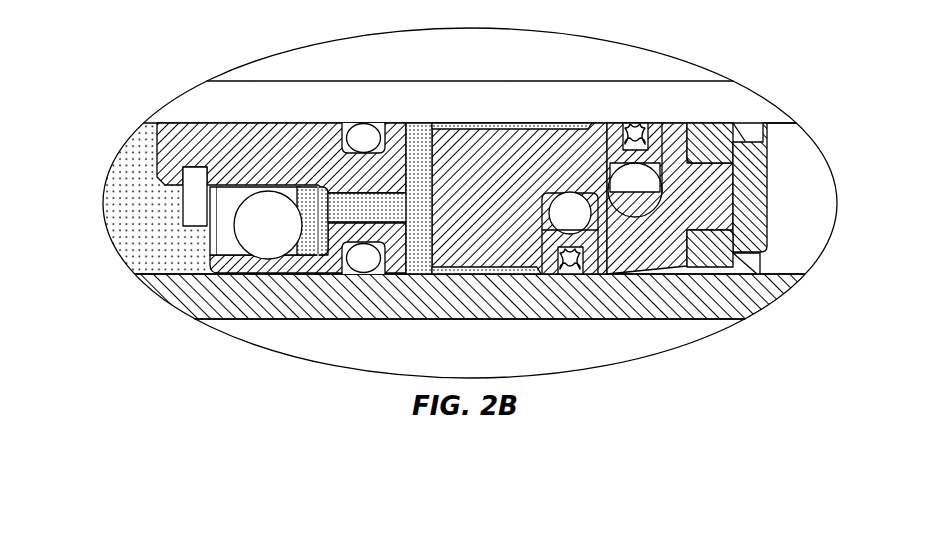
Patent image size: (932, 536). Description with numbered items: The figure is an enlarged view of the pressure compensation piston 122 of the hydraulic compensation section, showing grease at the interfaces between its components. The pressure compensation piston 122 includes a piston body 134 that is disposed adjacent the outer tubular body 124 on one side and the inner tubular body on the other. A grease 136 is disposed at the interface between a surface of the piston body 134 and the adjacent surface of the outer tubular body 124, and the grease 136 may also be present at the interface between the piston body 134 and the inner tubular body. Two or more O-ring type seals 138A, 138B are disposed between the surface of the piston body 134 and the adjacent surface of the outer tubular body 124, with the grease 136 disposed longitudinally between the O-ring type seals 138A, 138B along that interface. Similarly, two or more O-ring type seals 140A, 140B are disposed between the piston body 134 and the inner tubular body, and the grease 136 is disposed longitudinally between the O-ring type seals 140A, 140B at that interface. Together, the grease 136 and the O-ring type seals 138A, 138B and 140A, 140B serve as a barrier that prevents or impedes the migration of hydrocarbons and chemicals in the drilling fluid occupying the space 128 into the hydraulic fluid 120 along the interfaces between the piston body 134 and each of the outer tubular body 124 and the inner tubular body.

The hydraulic fluid 120 is at (142, 212).
The pressure compensation piston 122 is at (262, 67).
The outer tubular body 124 is at (485, 100).
The space 128 is at (789, 183).
The piston body 134 is at (288, 138).
The grease 136 is at (525, 127).
The O-ring type seal 138A is at (367, 137).
The O-ring type seal 138B is at (637, 127).
The O-ring type seal 140A is at (363, 263).
The O-ring type seal 140B is at (570, 275).